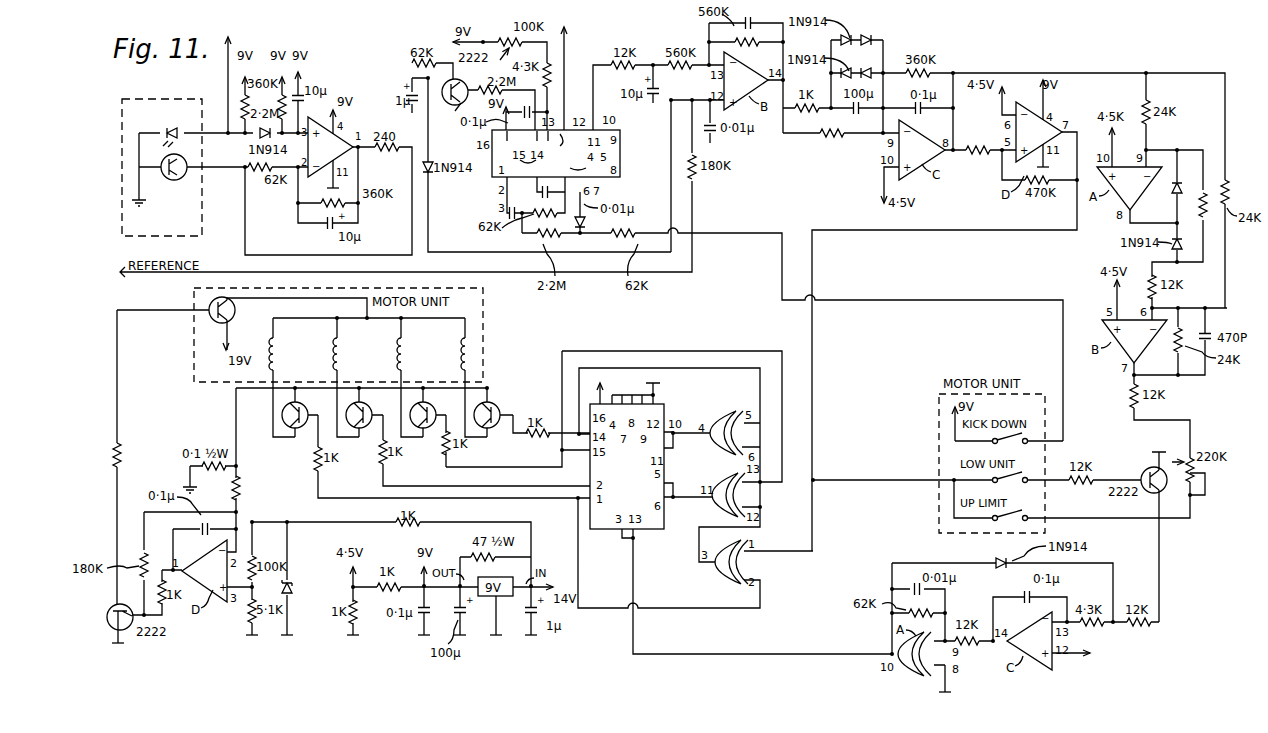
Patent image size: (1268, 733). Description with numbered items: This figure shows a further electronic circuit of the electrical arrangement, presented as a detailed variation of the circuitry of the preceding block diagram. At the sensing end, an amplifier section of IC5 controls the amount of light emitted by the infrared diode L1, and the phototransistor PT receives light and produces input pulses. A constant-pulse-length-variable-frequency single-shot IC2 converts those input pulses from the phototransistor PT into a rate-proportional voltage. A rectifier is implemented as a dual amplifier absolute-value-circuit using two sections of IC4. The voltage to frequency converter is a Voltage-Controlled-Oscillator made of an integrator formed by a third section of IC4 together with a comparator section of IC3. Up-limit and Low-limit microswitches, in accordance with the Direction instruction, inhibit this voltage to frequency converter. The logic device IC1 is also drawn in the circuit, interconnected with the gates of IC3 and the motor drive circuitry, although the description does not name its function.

The counter/logic integrated circuit IC1 is at (627, 466).
The constant-pulse-length-variable-frequency single-shot IC2 is at (556, 153).
The comparator IC3 is at (717, 456).
The dual amplifier IC4 is at (674, 418).
The light control amplifier IC5 is at (685, 116).
The infrared diode L1 is at (171, 127).
The phototransistor PT is at (174, 174).